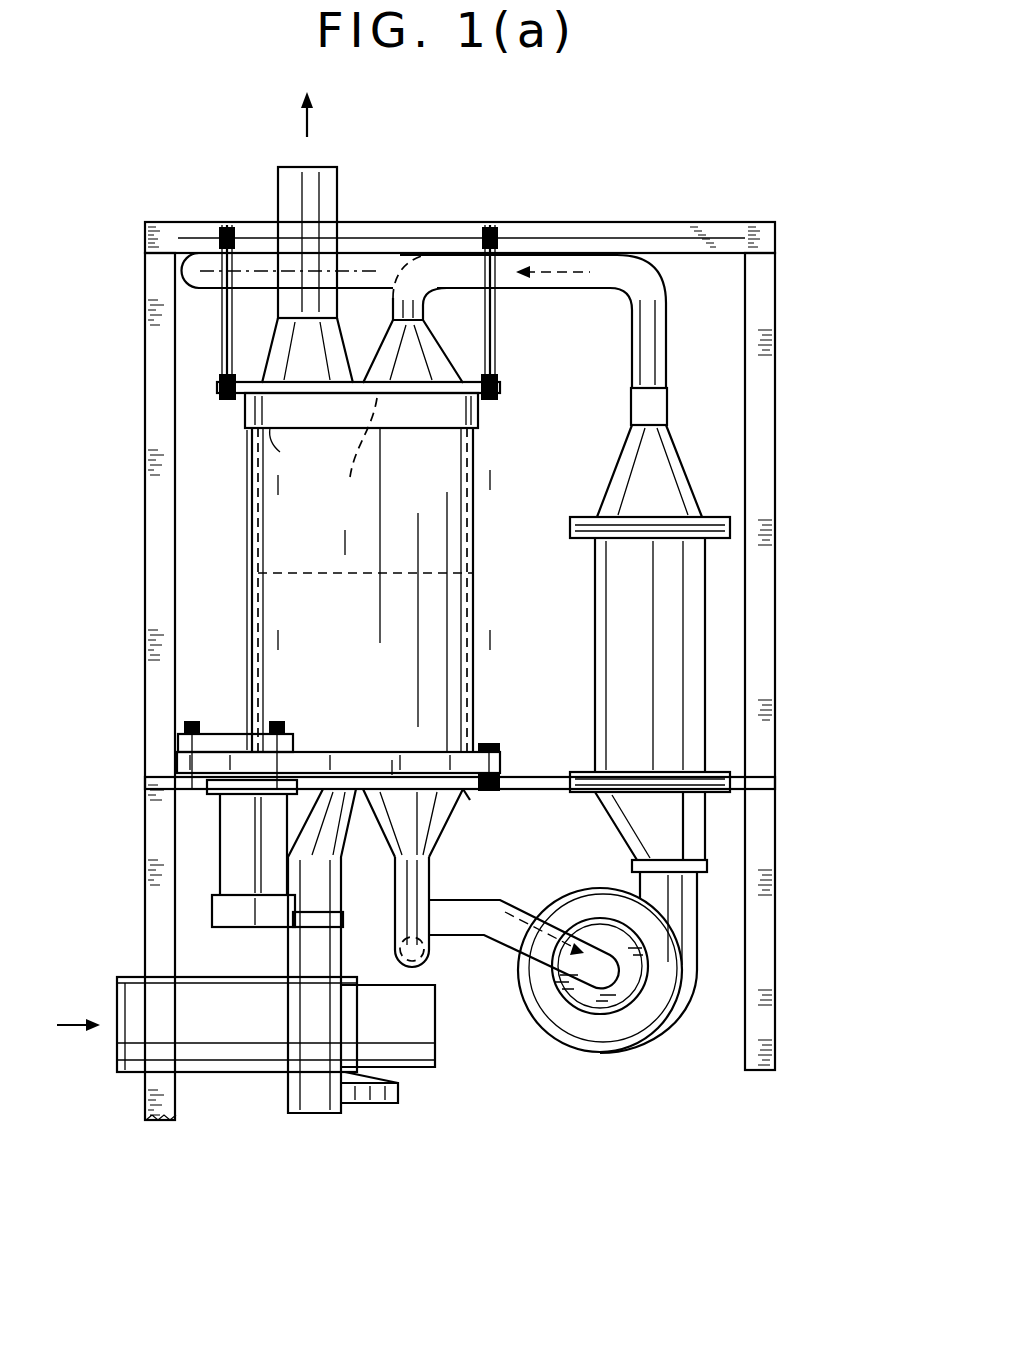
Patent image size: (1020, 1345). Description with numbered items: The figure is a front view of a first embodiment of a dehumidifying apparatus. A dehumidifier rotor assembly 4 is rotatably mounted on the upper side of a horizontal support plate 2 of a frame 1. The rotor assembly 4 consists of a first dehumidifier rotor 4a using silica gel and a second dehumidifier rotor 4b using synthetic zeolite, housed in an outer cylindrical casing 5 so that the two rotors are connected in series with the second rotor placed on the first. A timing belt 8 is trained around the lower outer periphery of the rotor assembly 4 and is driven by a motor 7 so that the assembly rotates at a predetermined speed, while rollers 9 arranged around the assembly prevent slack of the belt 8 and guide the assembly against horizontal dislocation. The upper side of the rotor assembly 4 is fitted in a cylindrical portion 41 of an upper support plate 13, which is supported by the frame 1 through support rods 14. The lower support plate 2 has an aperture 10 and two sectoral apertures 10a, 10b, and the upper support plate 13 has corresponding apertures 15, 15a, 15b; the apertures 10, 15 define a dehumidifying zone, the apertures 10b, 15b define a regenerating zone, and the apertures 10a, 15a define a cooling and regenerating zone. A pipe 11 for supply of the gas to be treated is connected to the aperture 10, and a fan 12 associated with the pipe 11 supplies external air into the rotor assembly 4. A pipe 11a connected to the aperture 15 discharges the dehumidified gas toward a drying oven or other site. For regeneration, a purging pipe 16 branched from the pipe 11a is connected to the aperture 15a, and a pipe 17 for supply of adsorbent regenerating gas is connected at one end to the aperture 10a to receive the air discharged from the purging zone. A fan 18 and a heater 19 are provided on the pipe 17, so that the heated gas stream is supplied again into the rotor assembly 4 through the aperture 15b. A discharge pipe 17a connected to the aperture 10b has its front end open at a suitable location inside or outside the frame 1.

The frame 1 is at (709, 224).
The horizontal support plate 2 is at (538, 778).
The dehumidifier rotor assembly 4 is at (244, 597).
The first dehumidifier rotor 4a is at (268, 672).
The second dehumidifier rotor 4b is at (255, 552).
The cylindrical portion 41 is at (272, 450).
The outer cylindrical casing 5 is at (250, 500).
The motor 7 is at (227, 832).
The timing belt 8 is at (392, 760).
The rollers 9 is at (297, 755).
The aperture 10 is at (338, 770).
The sectoral aperture 10a is at (467, 790).
The sectoral aperture 10b is at (450, 807).
The pipe 11 is at (300, 843).
The pipe 11a is at (290, 205).
The fan 12 is at (370, 1103).
The support plate 13 is at (417, 433).
The support rods 14 is at (227, 318).
The aperture 15 is at (243, 413).
The aperture 15a is at (352, 454).
The aperture 15b is at (480, 432).
The purging pipe 16 is at (370, 260).
The pipe 17 is at (666, 298).
The discharge pipe 17a is at (430, 962).
The fan 18 is at (627, 1025).
The heater 19 is at (690, 645).